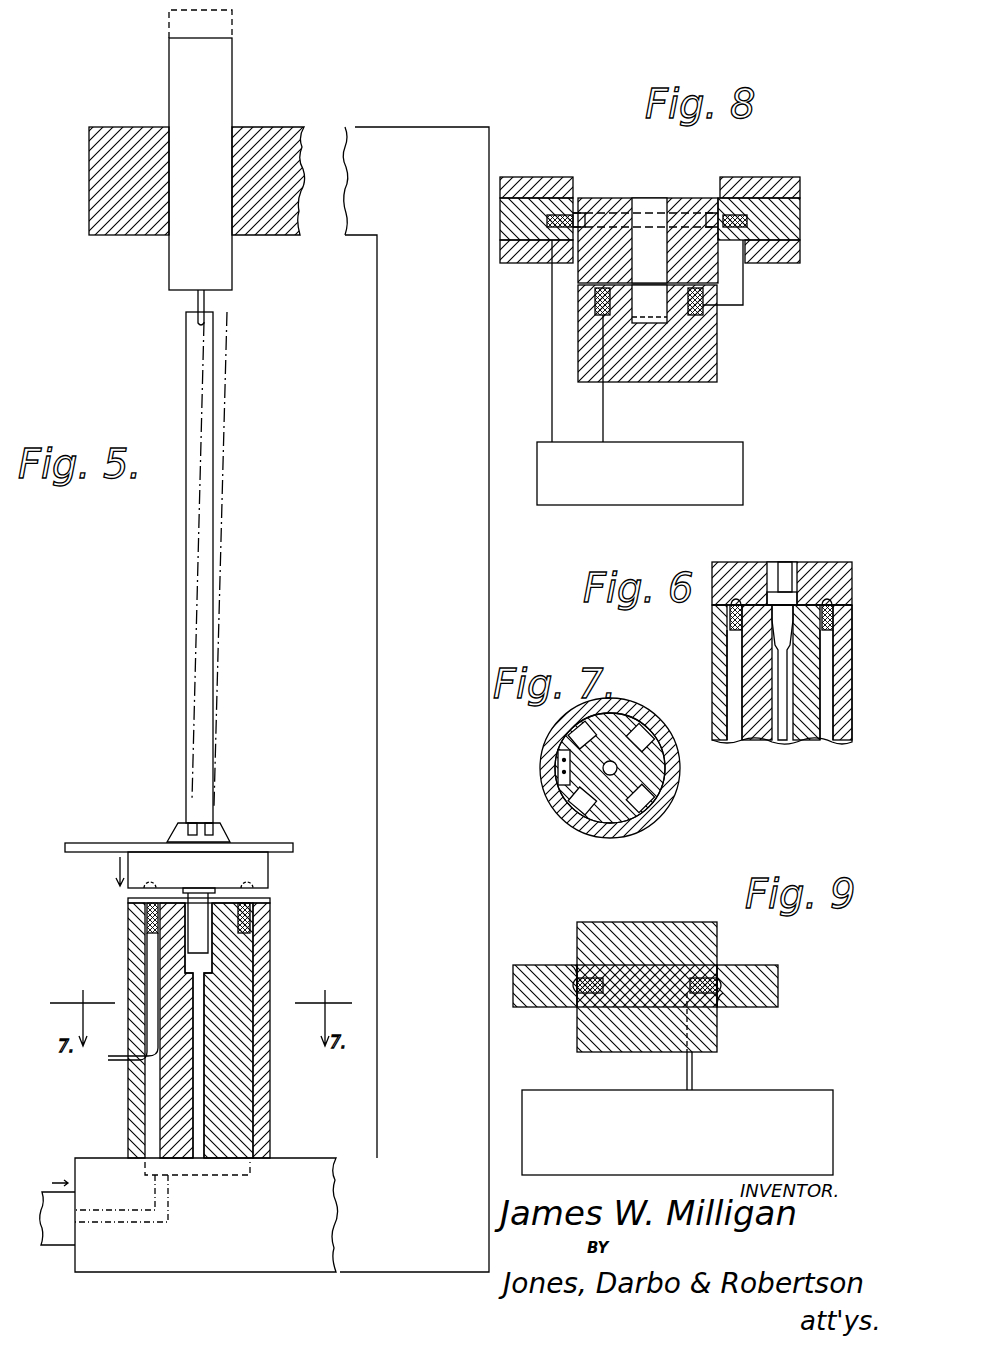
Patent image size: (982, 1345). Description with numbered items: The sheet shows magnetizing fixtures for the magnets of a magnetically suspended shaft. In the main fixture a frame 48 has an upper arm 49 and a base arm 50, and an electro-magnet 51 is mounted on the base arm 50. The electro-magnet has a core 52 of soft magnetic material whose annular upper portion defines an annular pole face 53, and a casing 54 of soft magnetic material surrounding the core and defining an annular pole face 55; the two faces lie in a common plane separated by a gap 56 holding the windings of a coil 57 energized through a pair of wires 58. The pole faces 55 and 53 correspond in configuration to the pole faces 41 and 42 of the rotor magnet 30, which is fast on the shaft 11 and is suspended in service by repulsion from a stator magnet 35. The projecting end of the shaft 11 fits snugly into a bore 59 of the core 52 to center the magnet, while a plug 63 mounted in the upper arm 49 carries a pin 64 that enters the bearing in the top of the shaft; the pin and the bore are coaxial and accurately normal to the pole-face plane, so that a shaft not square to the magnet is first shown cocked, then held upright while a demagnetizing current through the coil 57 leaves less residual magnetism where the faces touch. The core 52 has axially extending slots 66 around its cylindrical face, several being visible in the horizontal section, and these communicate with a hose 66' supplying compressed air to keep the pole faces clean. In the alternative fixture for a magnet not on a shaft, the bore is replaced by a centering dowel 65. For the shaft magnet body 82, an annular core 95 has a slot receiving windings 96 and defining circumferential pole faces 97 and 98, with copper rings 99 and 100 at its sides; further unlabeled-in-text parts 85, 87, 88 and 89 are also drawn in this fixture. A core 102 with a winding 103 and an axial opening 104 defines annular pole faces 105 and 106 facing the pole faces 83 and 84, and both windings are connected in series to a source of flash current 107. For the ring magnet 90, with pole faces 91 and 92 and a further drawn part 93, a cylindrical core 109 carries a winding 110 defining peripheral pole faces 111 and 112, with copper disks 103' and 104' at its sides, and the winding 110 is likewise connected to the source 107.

In FIG. 5, the shaft 11 is at (210, 769).
In FIG. 5, the rotor magnet 30 is at (228, 860).
In FIG. 6, the stator magnet 35 is at (828, 578).
In FIG. 5, the pole face 41 is at (268, 890).
In FIG. 5, the pole face 42 is at (222, 886).
In FIG. 5, the frame 48 is at (440, 632).
In FIG. 5, the upper arm 49 is at (270, 128).
In FIG. 5, the base arm 50 is at (278, 1227).
In FIG. 5, the electro-magnet 51 is at (281, 931).
In FIG. 6, the electro-magnet 51 is at (704, 686).
In FIG. 5, the core 52 is at (235, 992).
In FIG. 6, the core 52 is at (757, 645).
In FIG. 7, the core 52 is at (556, 795).
In FIG. 5, the annular pole face 53 is at (168, 898).
In FIG. 5, the casing 54 is at (270, 955).
In FIG. 6, the casing 54 is at (712, 706).
In FIG. 7, the casing 54 is at (682, 799).
In FIG. 5, the annular pole face 55 is at (264, 900).
In FIG. 5, the gap 56 is at (147, 917).
In FIG. 5, the coil 57 is at (152, 925).
In FIG. 6, the coil 57 is at (730, 618).
In FIG. 5, the wires 58 is at (113, 1062).
In FIG. 7, the wires 58 is at (560, 772).
In FIG. 7, the bore 59 is at (615, 770).
In FIG. 5, the plug 63 is at (195, 75).
In FIG. 5, the pin 64 is at (228, 298).
In FIG. 6, the centering dowel 65 is at (782, 600).
In FIG. 5, the slots 66 is at (121, 1124).
In FIG. 6, the slots 66 is at (754, 685).
In FIG. 7, the slots 66 is at (601, 789).
In FIG. 5, the hose 66' is at (45, 1245).
In FIG. 8, the magnet body 82 is at (680, 185).
In FIG. 8, the pole face 83 is at (715, 310).
In FIG. 8, the pole face 84 is at (649, 304).
In FIG. 8, the conductor 85 is at (693, 275).
In FIG. 8, the contact 87 is at (573, 200).
In FIG. 8, the lead 88 is at (547, 268).
In FIG. 8, the contact 89 is at (718, 240).
In FIG. 9, the ring magnet 90 is at (765, 965).
In FIG. 9, the pole face 91 is at (720, 965).
In FIG. 9, the pole face 92 is at (720, 1010).
In FIG. 9, the plate 93 is at (725, 985).
In FIG. 8, the annular core 95 is at (803, 221).
In FIG. 8, the electrical windings 96 is at (778, 198).
In FIG. 8, the circumferential pole face 97 is at (718, 200).
In FIG. 8, the circumferential pole face 98 is at (720, 283).
In FIG. 8, the annular ring 99 is at (762, 198).
In FIG. 8, the annular ring 100 is at (795, 263).
In FIG. 8, the core 102 is at (705, 370).
In FIG. 8, the winding 103 is at (687, 321).
In FIG. 9, the cylindrical copper disk 103' is at (602, 937).
In FIG. 8, the axial opening 104 is at (638, 378).
In FIG. 9, the cylindrical copper disk 104' is at (570, 1064).
In FIG. 8, the annular pole face 105 is at (580, 282).
In FIG. 8, the annular pole face 106 is at (681, 380).
In FIG. 8, the source of flash current 107 is at (720, 442).
In FIG. 9, the source of flash current 107 is at (735, 1090).
In FIG. 9, the cylindrical core 109 is at (637, 968).
In FIG. 9, the winding 110 is at (690, 975).
In FIG. 9, the peripheral pole face 111 is at (567, 970).
In FIG. 9, the peripheral pole face 112 is at (567, 1007).